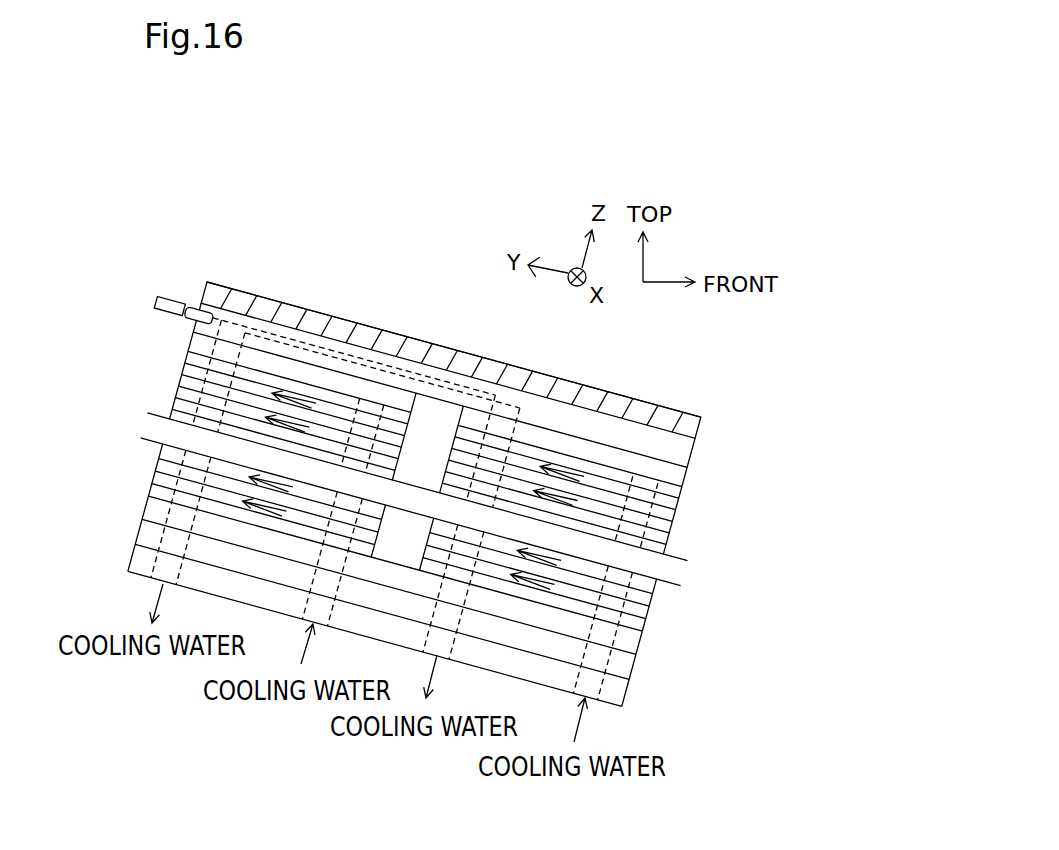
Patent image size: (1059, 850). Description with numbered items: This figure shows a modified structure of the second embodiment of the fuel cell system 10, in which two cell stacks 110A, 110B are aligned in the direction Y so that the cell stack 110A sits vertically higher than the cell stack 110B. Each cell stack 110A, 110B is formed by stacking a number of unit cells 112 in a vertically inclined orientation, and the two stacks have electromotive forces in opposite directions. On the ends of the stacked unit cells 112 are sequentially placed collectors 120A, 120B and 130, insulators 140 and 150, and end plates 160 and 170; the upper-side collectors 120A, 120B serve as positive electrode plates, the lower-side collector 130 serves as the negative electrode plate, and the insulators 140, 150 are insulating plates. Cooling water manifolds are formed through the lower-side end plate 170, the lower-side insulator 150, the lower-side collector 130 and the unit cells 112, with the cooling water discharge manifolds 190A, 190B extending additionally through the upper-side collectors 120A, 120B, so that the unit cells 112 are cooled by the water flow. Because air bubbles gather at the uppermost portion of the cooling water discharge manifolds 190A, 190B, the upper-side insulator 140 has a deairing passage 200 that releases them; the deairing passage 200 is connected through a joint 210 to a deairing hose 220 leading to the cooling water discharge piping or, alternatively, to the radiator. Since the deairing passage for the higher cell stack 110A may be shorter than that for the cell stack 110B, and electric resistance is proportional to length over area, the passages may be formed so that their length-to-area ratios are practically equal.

The fuel cell system 10 is at (432, 168).
The cell stack 110A is at (244, 444).
The cell stack 110B is at (624, 533).
The unit cell 112 is at (606, 503).
The collector 120A is at (190, 340).
The collector 120B is at (687, 482).
The collector 130 is at (645, 648).
The insulator 140 is at (693, 453).
The insulator 150 is at (637, 673).
The end plate 160 is at (700, 430).
The end plate 170 is at (628, 698).
The cooling water discharge manifold 190A is at (172, 495).
The cooling water discharge manifold 190B is at (650, 534).
The deairing passage 200 is at (412, 337).
The joint 210 is at (200, 306).
The deairing hose 220 is at (172, 300).